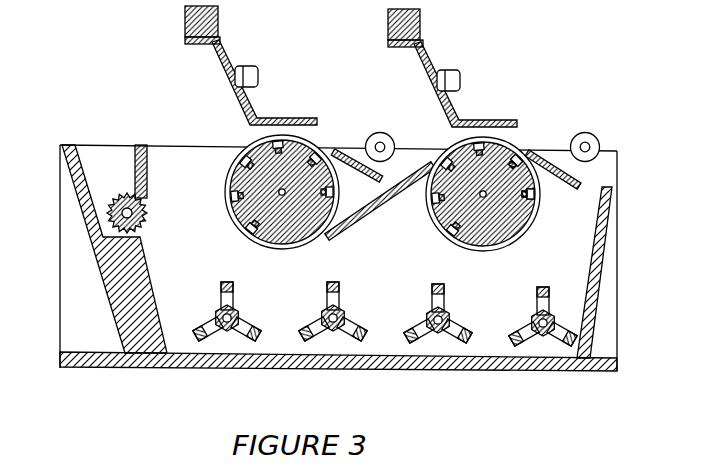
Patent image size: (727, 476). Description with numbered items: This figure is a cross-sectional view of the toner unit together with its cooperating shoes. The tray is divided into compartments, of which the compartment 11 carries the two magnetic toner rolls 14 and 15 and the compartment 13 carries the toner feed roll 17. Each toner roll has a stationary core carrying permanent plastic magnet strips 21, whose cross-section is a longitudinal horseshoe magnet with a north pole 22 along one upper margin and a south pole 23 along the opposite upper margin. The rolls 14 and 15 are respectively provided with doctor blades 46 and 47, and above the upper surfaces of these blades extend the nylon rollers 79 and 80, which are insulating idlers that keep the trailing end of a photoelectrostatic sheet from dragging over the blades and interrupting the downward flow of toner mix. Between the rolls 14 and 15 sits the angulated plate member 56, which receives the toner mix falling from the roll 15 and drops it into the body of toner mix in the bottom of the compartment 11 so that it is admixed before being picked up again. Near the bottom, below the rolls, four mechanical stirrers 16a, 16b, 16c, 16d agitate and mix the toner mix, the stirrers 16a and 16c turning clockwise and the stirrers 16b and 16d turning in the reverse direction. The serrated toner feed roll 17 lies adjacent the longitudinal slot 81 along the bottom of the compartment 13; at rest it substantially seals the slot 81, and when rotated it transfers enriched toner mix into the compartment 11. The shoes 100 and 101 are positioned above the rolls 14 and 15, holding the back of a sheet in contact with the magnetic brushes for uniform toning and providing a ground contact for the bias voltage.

The compartment 11 is at (182, 163).
The compartment 13 is at (126, 158).
The magnetic toner roll 14 is at (247, 134).
The magnetic toner roll 15 is at (450, 138).
The mechanical stirrer 16a is at (224, 282).
The mechanical stirrer 16b is at (331, 282).
The mechanical stirrer 16c is at (440, 284).
The mechanical stirrer 16d is at (563, 282).
The toner feed roll 17 is at (148, 210).
The permanent plastic magnet strip 21 is at (535, 193).
The north pole 22 is at (516, 146).
The south pole 23 is at (527, 156).
The doctor blade 46 is at (352, 160).
The doctor blade 47 is at (573, 183).
The angulated plate member 56 is at (386, 205).
The nylon roller 79 is at (383, 132).
The nylon roller 80 is at (596, 134).
The longitudinal slot 81 is at (136, 227).
The shoe 100 is at (226, 43).
The shoe 101 is at (428, 43).